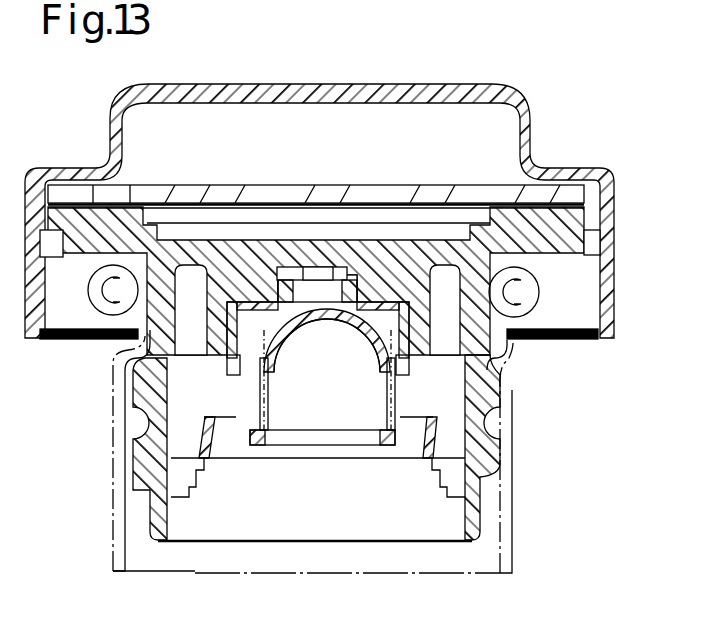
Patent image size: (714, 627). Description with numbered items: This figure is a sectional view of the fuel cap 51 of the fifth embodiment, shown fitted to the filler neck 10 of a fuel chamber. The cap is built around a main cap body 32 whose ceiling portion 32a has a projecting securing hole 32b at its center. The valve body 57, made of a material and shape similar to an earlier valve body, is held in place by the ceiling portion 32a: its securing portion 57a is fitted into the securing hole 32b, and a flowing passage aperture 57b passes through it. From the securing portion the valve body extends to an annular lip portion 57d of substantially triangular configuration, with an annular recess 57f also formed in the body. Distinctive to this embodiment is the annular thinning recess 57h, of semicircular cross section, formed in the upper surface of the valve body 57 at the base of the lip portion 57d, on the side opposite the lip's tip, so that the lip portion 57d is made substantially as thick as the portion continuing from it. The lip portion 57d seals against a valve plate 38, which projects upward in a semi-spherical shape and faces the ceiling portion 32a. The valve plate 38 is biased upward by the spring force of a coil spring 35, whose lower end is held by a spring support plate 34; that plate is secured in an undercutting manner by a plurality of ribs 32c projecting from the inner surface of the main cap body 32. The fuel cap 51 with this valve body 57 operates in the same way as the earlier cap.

The fuel cap 51 is at (530, 104).
The valve body 57 is at (273, 263).
The securing portion 57a is at (284, 265).
The flowing passage aperture 57b is at (319, 272).
The projecting securing hole 32b is at (358, 262).
The ceiling portion 32a is at (400, 262).
The annular thinning recess 57h is at (485, 370).
The valve plate 38 is at (240, 335).
The spring support plate 34 is at (242, 437).
The ribs 32c is at (453, 488).
The filler neck 10 is at (110, 528).
The annular recess 57f is at (283, 330).
The lip portion 57d is at (283, 312).
The coil spring 35 is at (357, 425).
The main cap body 32 is at (487, 408).